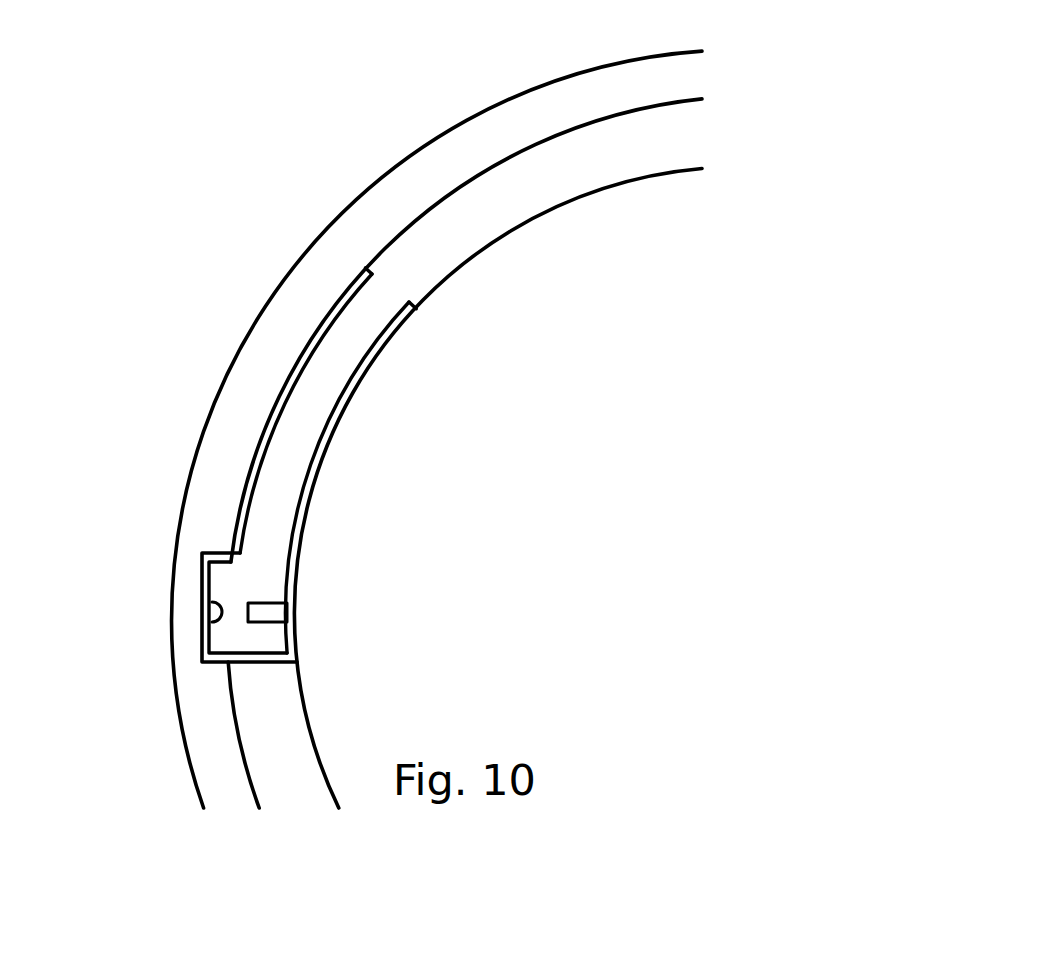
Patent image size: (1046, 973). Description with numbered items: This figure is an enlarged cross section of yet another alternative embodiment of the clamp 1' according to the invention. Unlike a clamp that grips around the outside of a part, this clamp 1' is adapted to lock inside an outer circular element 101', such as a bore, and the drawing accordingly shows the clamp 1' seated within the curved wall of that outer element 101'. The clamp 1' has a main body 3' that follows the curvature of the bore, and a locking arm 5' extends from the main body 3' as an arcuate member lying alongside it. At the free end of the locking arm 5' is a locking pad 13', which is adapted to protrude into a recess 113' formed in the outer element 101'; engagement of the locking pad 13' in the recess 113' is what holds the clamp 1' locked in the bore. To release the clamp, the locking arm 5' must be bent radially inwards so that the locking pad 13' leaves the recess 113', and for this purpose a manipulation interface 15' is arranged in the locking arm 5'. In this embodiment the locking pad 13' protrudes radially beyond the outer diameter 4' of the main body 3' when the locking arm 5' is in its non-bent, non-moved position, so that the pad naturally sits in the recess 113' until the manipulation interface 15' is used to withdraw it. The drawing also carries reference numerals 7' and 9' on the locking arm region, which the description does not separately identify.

The clamp 1' is at (566, 519).
The main body 3' is at (498, 428).
The outer diameter of the main body 4' is at (465, 431).
The outer circular element 101' is at (437, 429).
The locking arm 5' is at (294, 475).
The liner of channel 7' is at (304, 382).
The bottom of pocket 9' is at (185, 651).
The locking pad 13' is at (194, 570).
The recess 113' is at (132, 594).
The manipulation interface 15' is at (328, 575).